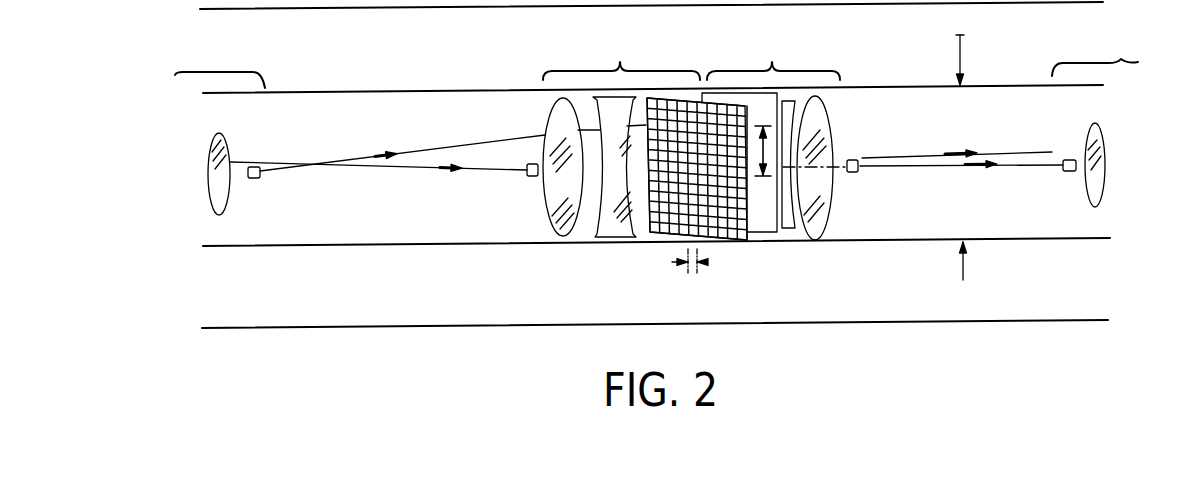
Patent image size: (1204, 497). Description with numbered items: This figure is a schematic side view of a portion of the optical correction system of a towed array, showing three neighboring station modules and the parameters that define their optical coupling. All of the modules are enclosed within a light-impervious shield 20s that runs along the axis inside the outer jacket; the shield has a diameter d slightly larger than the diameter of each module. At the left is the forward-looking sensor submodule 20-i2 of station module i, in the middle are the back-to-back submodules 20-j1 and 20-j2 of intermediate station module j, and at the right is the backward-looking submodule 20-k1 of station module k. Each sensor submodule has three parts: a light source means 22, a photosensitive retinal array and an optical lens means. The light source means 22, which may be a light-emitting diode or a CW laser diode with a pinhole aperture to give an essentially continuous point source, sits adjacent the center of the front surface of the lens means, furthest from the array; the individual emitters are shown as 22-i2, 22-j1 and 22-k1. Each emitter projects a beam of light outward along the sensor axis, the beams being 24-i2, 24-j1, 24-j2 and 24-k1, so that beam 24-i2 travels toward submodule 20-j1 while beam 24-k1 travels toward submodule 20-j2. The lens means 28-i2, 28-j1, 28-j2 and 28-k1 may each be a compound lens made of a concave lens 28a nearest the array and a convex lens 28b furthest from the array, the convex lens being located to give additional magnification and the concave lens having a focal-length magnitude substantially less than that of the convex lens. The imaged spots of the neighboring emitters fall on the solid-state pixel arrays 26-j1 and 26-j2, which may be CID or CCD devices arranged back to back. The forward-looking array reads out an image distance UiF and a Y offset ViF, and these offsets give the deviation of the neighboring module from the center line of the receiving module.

The forward-looking sensor submodule of station module i 20-i2 is at (183, 72).
The backward-looking sensor submodule of station module j 20-j1 is at (620, 62).
The forward-looking sensor submodule of station module j 20-j2 is at (772, 62).
The backward-looking sensor submodule of station module k 20-k1 is at (1121, 59).
The light-impervious shield 20s is at (884, 83).
The shield diameter d is at (967, 53).
The light source means of submodule i2 22-i2 is at (254, 178).
The light source means of submodule j1 22-j1 is at (532, 176).
The light source means 22 is at (852, 172).
The light source means of submodule k1 22-k1 is at (1068, 171).
The light beam from emitter 22-i2 24-i2 is at (323, 162).
The light beam from emitter 22-j1 24-j1 is at (412, 170).
The light beam from emitter 22-j2 24-j2 is at (907, 156).
The light beam from emitter 22-k1 24-k1 is at (1003, 170).
The photosensitive (retinal) array of submodule j1 26-j1 is at (710, 240).
The photosensitive (retinal) array of submodule j2 26-j2 is at (771, 232).
The concave lens 28a is at (612, 237).
The convex lens 28b is at (220, 215).
The optical lens means of submodule i2 28-i2 is at (257, 257).
The optical lens means of submodule j1 28-j1 is at (524, 271).
The optical lens means of submodule j2 28-j2 is at (833, 268).
The optical lens means of submodule k1 28-k1 is at (1077, 259).
The forward-looking image distance UiF is at (767, 150).
The forward-looking Y offset ViF is at (688, 273).